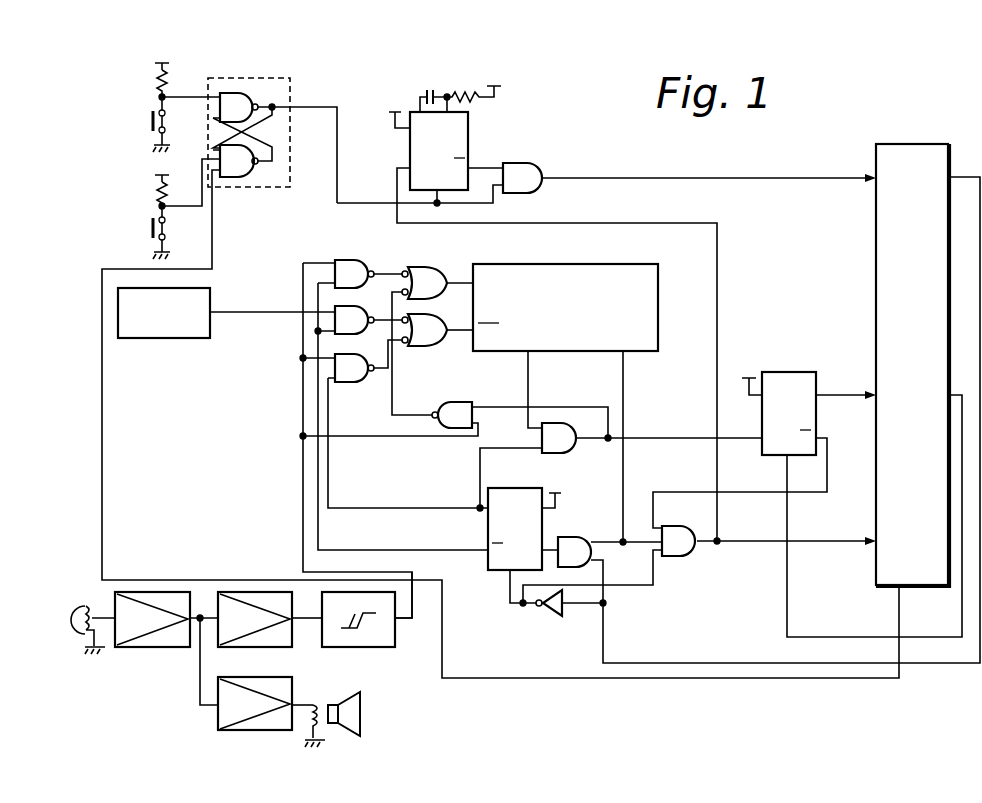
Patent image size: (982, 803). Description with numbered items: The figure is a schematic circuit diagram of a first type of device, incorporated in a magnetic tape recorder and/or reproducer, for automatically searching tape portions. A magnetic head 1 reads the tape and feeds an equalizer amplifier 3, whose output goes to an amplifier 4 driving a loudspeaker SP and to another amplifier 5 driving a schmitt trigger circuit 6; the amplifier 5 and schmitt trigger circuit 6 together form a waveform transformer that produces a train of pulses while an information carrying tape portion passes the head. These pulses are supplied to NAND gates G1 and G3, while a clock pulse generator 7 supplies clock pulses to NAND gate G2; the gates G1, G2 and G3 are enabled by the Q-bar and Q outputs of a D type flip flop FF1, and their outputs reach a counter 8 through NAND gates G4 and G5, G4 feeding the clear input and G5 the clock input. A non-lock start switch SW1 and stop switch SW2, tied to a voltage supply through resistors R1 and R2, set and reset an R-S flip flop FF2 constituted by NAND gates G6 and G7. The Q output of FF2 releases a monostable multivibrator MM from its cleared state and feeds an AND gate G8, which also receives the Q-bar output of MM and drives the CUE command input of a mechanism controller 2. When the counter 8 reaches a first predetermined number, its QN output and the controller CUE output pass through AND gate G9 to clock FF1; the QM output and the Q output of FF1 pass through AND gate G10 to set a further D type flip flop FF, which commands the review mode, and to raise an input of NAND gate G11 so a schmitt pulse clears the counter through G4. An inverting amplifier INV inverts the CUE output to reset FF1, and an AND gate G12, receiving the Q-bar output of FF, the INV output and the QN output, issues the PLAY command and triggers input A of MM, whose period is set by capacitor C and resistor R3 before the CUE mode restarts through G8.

The magnetic head 1 is at (84, 662).
The mechanism controller 2 is at (916, 144).
The equalizer amplifier 3 is at (152, 648).
The amplifier 4 is at (216, 717).
The amplifier 5 is at (254, 648).
The schmitt trigger circuit 6 is at (355, 648).
The clock pulse generator 7 is at (163, 340).
The counter 8 is at (613, 264).
The resistor R1 is at (154, 88).
The resistor R2 is at (154, 194).
The resistor R3 is at (464, 96).
The capacitor C is at (430, 91).
The start switch SW1 is at (149, 137).
The stop switch SW2 is at (132, 247).
The D type flip flop FF is at (788, 372).
The D type flip flop FF1 is at (512, 488).
The R-S type flip flop circuit FF2 is at (500, 378).
The monostable multivibrator MM is at (470, 140).
The inverting amplifier INV is at (549, 617).
The loudspeaker SP is at (362, 716).
The NAND gate G1 is at (346, 262).
The NAND gate G2 is at (362, 308).
The NAND gate G3 is at (358, 383).
The NAND gate G4 is at (418, 268).
The NAND gate G5 is at (420, 316).
The NAND gate G6 is at (275, 143).
The NAND gate G7 is at (250, 216).
The AND gate G8 is at (536, 165).
The AND gate G9 is at (575, 537).
The AND gate G10 is at (570, 452).
The NAND gate G11 is at (459, 401).
The AND gate G12 is at (690, 556).